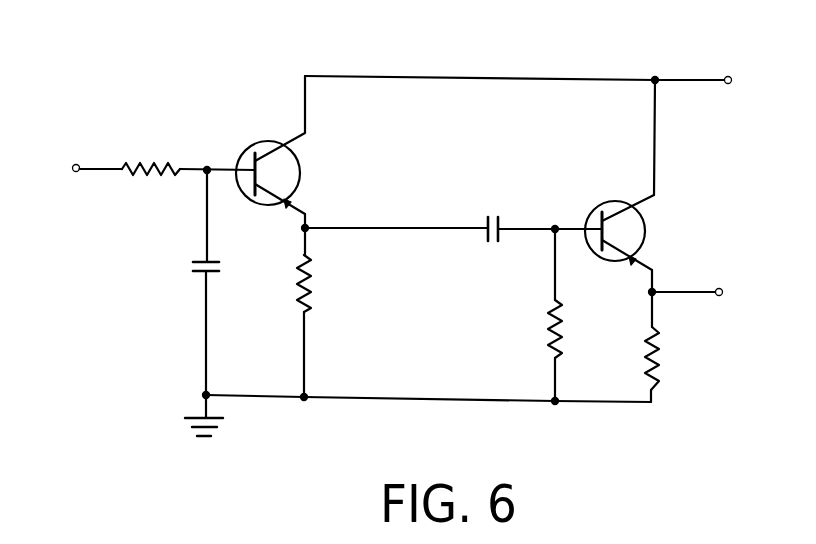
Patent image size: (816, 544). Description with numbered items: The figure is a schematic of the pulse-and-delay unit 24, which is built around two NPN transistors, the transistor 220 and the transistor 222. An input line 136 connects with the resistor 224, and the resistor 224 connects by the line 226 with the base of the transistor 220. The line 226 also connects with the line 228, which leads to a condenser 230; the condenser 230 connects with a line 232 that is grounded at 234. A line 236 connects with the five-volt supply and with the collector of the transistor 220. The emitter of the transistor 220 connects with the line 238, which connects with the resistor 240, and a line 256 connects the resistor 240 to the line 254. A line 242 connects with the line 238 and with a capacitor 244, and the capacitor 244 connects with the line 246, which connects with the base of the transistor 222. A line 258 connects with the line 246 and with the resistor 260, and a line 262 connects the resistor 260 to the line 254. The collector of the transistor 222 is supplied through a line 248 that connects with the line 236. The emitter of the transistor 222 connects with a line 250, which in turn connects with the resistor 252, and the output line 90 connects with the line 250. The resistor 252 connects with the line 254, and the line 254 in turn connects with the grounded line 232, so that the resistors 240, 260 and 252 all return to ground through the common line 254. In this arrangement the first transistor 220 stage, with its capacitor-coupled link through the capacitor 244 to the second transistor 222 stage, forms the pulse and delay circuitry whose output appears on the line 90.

The pulse-and-delay unit 24 is at (383, 223).
The line 136 is at (84, 176).
The resistor 224 is at (143, 163).
The line 226 is at (196, 167).
The NPN transistor 220 is at (302, 172).
The line 238 is at (308, 216).
The line 228 is at (204, 222).
The condenser 230 is at (193, 258).
The line 232 is at (203, 328).
The ground 234 is at (197, 427).
The resistor 240 is at (308, 292).
The line 256 is at (308, 352).
The line 254 is at (455, 401).
The line 242 is at (423, 226).
The capacitor 244 is at (499, 216).
The line 246 is at (523, 233).
The line 236 is at (553, 62).
The line 248 is at (658, 136).
The NPN transistor 222 is at (647, 230).
The line 250 is at (653, 272).
The line 90 is at (712, 297).
The line 258 is at (557, 279).
The resistor 260 is at (558, 335).
The line 262 is at (557, 380).
The resistor 252 is at (660, 373).